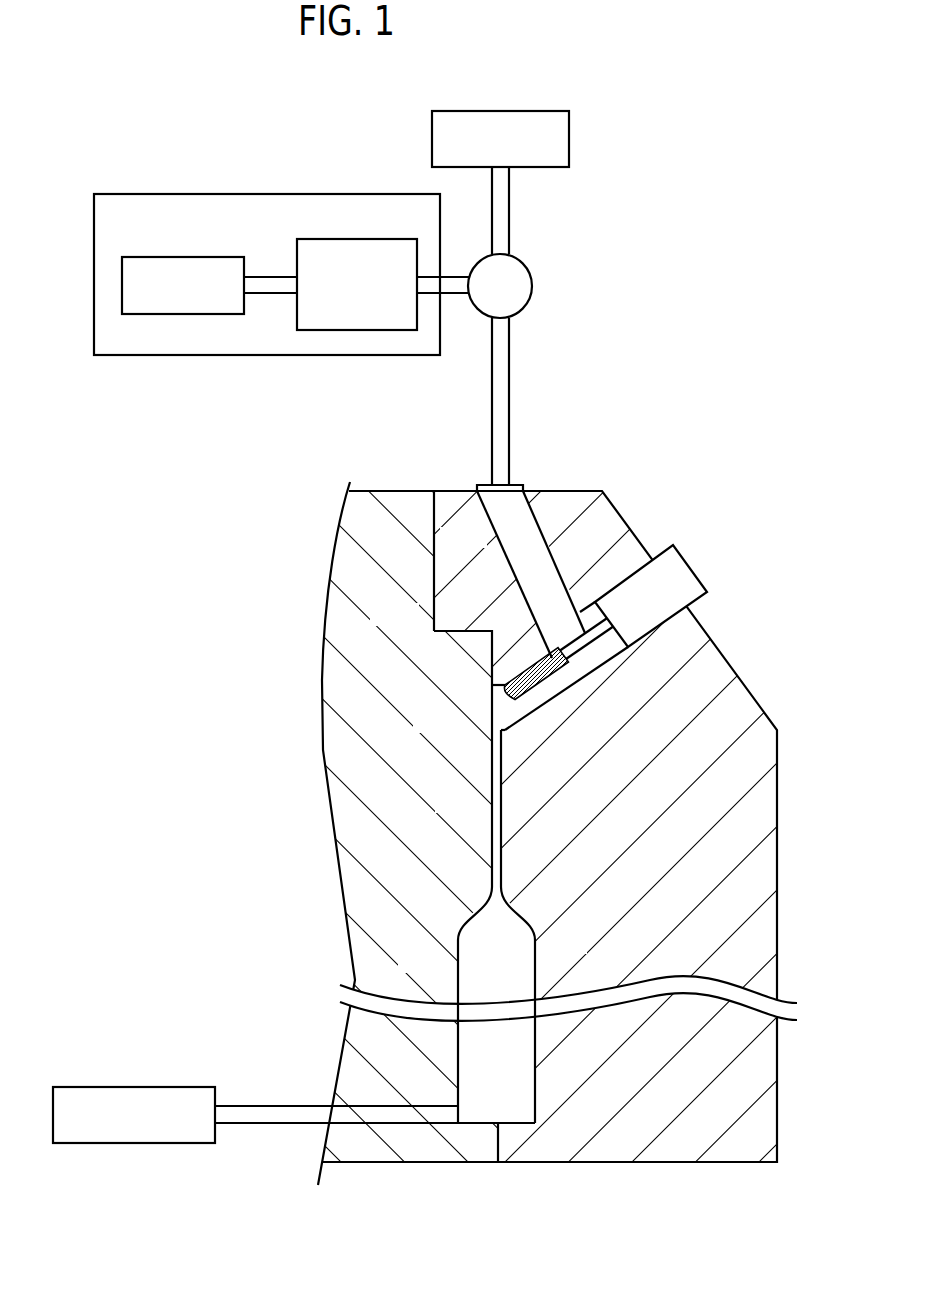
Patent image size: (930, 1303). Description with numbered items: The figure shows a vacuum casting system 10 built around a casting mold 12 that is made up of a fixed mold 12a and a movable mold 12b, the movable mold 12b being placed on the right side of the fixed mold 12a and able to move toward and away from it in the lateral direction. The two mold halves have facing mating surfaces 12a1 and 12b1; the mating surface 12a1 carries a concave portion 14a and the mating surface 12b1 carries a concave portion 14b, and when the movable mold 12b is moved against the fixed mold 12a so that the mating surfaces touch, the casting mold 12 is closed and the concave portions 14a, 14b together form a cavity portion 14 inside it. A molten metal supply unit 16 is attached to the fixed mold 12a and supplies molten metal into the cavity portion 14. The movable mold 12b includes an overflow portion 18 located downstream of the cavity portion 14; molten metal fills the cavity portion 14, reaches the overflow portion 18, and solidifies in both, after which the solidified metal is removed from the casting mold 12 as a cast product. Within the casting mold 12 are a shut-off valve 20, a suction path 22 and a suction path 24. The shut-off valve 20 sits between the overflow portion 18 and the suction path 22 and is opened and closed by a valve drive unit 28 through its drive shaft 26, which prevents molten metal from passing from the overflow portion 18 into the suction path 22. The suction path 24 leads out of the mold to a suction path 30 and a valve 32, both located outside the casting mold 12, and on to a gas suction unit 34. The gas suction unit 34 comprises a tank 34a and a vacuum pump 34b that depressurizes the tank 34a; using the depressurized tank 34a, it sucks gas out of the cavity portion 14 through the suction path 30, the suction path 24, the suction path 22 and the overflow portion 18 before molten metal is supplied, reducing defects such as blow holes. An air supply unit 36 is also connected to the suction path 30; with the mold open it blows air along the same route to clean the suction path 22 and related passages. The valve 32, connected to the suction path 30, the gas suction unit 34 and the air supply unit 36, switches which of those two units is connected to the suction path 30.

The vacuum casting system 10 is at (175, 90).
The casting mold 12 is at (550, 704).
The fixed mold 12a is at (380, 491).
The movable mold 12b is at (454, 491).
The mating surface 12a1 is at (435, 572).
The mating surface 12b1 is at (435, 577).
The cavity portion 14 is at (492, 1005).
The concave portion 14a is at (459, 994).
The concave portion 14b is at (535, 984).
The molten metal supply unit 16 is at (120, 1087).
The overflow portion 18 is at (494, 819).
The shut-off valve 20 is at (506, 700).
The suction path 22 is at (543, 659).
The suction path 24 is at (552, 550).
The drive shaft 26 is at (582, 661).
The valve drive unit 28 is at (688, 559).
The suction path 30 is at (511, 378).
The valve 32 is at (534, 280).
The gas suction unit 34 is at (281, 250).
The tank 34a is at (345, 239).
The vacuum pump 34b is at (166, 257).
The air supply unit 36 is at (492, 111).